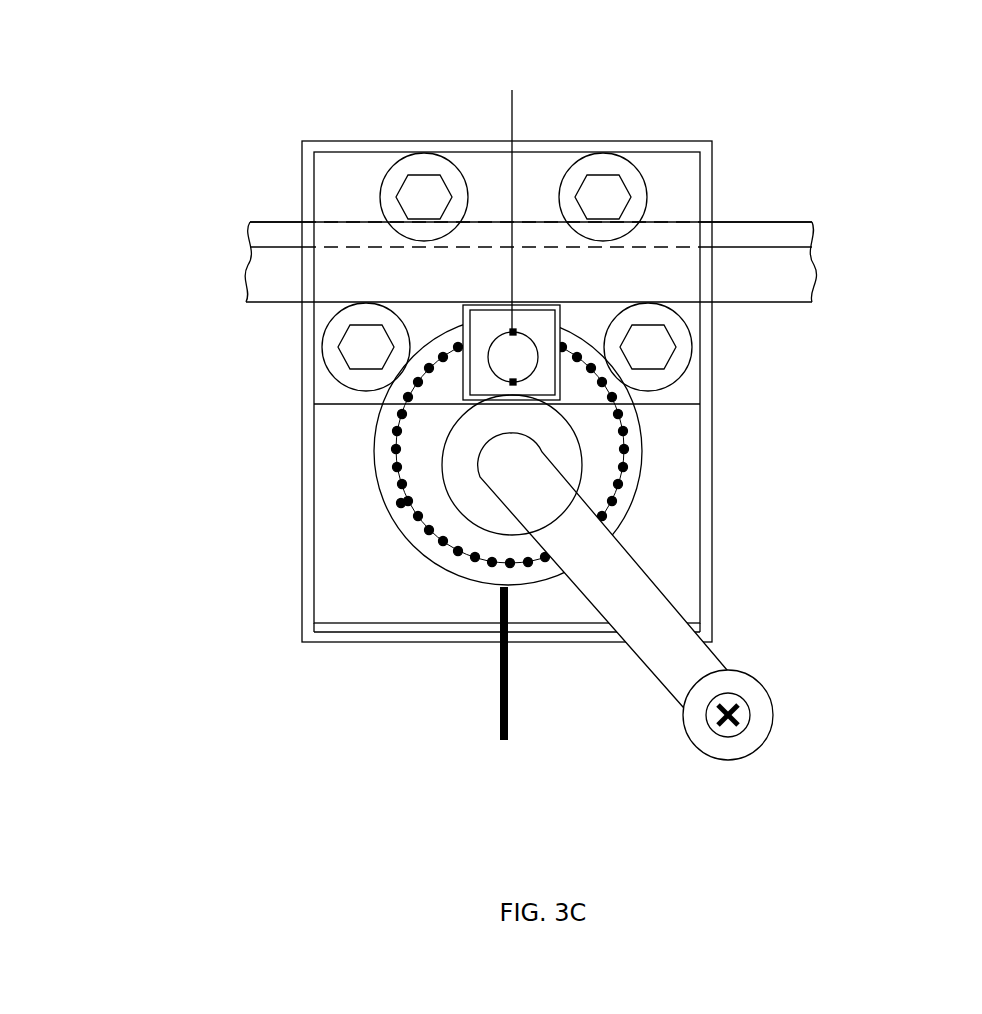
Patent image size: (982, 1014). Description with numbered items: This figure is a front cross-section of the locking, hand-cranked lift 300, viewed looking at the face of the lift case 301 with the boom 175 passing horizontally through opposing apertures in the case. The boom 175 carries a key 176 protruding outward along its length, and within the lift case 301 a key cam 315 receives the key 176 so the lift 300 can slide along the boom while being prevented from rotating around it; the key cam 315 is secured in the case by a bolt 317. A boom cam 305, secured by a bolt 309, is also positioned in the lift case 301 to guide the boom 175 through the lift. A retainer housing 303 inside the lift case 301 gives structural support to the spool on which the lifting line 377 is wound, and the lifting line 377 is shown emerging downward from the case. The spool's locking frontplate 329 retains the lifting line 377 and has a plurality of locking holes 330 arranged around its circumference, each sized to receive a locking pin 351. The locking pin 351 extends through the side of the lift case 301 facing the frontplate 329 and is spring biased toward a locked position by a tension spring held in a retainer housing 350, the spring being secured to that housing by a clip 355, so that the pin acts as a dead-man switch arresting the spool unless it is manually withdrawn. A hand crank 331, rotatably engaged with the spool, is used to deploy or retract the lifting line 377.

The lift 300 is at (535, 427).
The lift case 301 is at (385, 637).
The retainer housing 303 is at (350, 610).
The boom 175 is at (768, 270).
The key 176 is at (798, 215).
The key cam 315 is at (427, 162).
The bolt 317 is at (416, 191).
The boom cam 305 is at (337, 329).
The bolt 309 is at (370, 352).
The retainer housing 350 is at (418, 423).
The locking frontplate 329 is at (627, 445).
The locking holes 330 is at (401, 505).
The clip 355 is at (511, 231).
The hand crank 331 is at (615, 592).
The locking pin 351 is at (515, 358).
The lifting line 377 is at (497, 697).